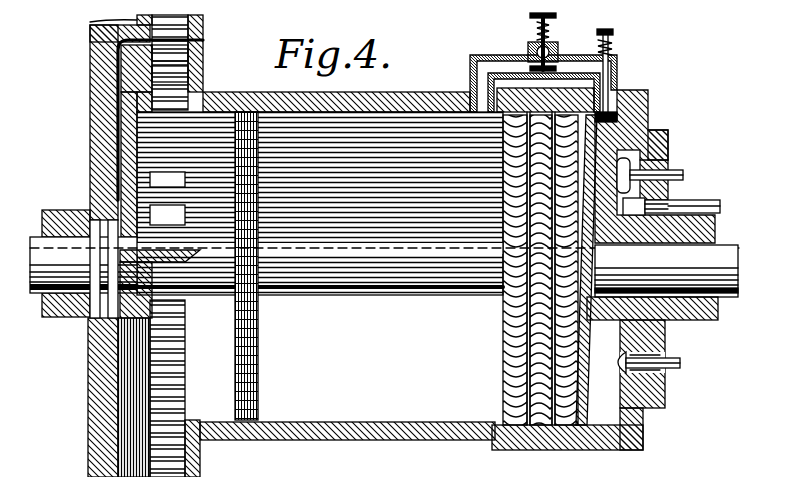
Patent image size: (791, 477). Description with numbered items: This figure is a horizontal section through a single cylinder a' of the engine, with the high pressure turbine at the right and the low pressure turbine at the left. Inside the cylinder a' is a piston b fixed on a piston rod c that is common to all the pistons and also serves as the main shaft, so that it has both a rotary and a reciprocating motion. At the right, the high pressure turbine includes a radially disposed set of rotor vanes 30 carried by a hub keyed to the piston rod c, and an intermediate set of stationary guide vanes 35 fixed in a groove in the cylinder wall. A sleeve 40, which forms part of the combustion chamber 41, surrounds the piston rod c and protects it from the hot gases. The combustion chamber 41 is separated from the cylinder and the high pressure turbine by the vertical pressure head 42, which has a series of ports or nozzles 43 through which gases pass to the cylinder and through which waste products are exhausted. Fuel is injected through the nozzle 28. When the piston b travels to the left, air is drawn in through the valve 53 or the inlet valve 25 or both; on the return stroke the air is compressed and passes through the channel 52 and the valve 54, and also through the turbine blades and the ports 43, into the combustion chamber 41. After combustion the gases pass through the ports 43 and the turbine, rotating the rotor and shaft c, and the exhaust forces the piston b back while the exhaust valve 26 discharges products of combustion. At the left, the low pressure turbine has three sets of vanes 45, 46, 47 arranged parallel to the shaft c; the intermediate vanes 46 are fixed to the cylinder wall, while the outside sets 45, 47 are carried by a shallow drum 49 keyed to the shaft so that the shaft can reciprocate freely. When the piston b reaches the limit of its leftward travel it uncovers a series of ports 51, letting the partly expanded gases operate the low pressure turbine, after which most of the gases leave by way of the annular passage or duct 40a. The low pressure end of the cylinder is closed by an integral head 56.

The annular passage or duct 40a is at (137, 20).
The outside set of vanes 45 is at (175, 52).
The intermediate vanes 46 is at (178, 68).
The outside set of vanes 47 is at (178, 83).
The integral head 56 is at (100, 57).
The shallow drum 49 is at (133, 73).
The ports 51 is at (168, 180).
The channel 52 is at (482, 68).
The valve 53 is at (552, 50).
The valve 54 is at (613, 118).
The vertical pressure head 42 is at (622, 142).
The combustion chamber 41 is at (645, 147).
The inlet valve 25 is at (640, 163).
The nozzle 28 is at (678, 196).
The sleeve 40 is at (607, 235).
The ports or nozzles 43 is at (590, 347).
The exhaust valve 26 is at (660, 370).
The set of vanes 30 is at (511, 364).
The intermediate set of guide vanes 35 is at (540, 418).
The cylinder a' is at (320, 178).
The piston b is at (258, 330).
The piston rod c is at (405, 293).